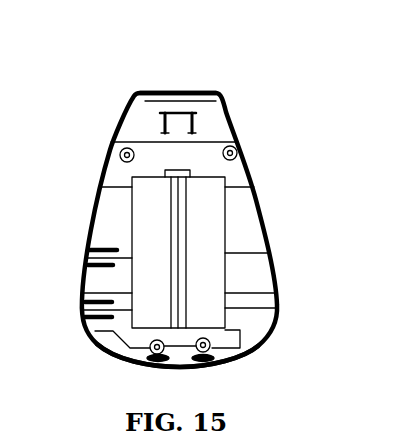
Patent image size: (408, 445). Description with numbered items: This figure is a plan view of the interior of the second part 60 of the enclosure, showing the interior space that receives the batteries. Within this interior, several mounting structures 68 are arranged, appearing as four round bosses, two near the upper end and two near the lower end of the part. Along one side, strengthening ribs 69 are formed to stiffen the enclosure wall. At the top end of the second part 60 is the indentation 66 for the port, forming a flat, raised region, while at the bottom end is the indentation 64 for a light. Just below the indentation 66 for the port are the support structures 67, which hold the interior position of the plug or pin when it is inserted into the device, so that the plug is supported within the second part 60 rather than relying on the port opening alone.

The second part 60 is at (272, 240).
The indentation for a light 64 is at (182, 368).
The indentation for the port 66 is at (180, 92).
The support structures 67 is at (203, 118).
The mounting structures 68 is at (119, 153).
The strengthening ribs 69 is at (84, 259).